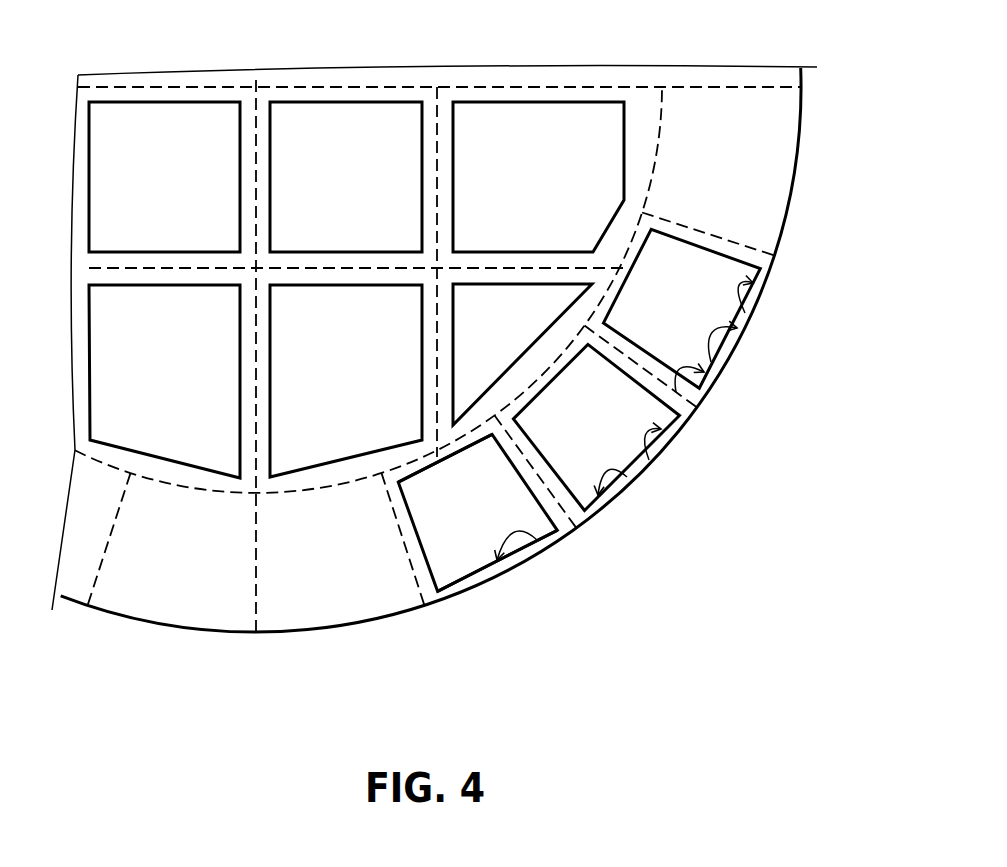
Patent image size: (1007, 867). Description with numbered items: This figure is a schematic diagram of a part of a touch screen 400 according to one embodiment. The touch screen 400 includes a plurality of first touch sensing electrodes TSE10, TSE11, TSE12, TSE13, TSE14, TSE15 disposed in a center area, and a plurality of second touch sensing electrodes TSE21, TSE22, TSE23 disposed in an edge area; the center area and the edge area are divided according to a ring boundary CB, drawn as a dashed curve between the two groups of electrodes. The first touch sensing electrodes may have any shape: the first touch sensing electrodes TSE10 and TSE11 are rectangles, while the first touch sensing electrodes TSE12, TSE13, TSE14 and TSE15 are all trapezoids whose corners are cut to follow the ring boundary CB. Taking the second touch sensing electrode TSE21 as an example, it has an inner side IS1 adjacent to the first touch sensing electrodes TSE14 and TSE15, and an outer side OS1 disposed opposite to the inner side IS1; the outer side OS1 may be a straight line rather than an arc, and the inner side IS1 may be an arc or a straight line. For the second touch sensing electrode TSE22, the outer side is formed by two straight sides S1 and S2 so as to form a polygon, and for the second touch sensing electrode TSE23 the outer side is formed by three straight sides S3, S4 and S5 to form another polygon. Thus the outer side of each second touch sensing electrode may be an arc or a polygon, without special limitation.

The touch screen 400 is at (690, 656).
The ring boundary CB is at (661, 124).
The first touch sensing electrode TSE10 is at (164, 177).
The first touch sensing electrode TSE11 is at (346, 177).
The first touch sensing electrode TSE12 is at (538, 177).
The first touch sensing electrode TSE13 is at (164, 381).
The first touch sensing electrode TSE14 is at (346, 381).
The first touch sensing electrode TSE15 is at (522, 354).
The second touch sensing electrode TSE21 is at (458, 552).
The second touch sensing electrode TSE22 is at (596, 427).
The second touch sensing electrode TSE23 is at (681, 308).
The inner side IS1 is at (435, 470).
The outer side OS1 is at (535, 535).
The straight side S1 is at (632, 478).
The straight side S2 is at (655, 460).
The straight side S3 is at (685, 405).
The straight side S4 is at (722, 362).
The straight side S5 is at (750, 315).